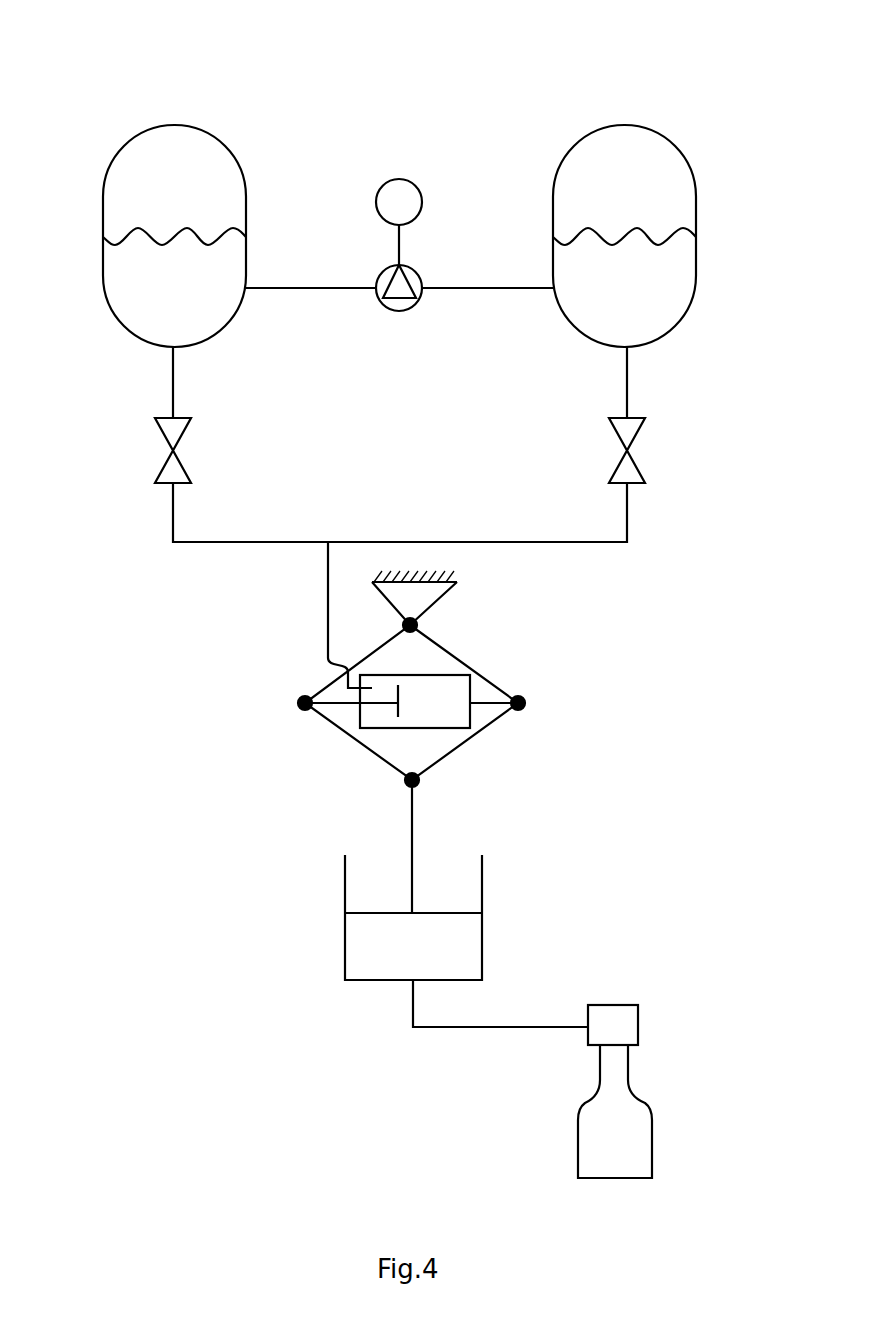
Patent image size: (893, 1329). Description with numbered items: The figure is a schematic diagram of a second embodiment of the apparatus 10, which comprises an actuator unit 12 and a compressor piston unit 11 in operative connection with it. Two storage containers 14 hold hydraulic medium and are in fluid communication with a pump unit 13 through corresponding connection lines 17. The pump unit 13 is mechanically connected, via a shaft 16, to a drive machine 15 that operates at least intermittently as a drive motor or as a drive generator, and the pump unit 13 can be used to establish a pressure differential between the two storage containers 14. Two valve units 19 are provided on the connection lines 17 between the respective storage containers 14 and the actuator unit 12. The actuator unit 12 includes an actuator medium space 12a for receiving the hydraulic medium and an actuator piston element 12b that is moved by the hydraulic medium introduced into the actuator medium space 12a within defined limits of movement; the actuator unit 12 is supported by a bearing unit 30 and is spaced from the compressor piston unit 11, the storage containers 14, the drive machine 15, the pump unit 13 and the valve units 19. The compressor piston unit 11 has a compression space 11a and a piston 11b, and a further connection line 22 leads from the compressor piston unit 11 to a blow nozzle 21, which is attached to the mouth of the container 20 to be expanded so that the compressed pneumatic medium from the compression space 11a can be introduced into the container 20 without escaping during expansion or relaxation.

The apparatus 10 is at (146, 80).
The compressor piston unit 11 is at (390, 885).
The compression space 11a is at (473, 939).
The piston 11b is at (372, 915).
The actuator unit 12 is at (442, 707).
The actuator medium space 12a is at (445, 683).
The actuator piston element 12b is at (378, 707).
The pump unit 13 is at (394, 312).
The storage container 14 is at (193, 165).
The drive machine 15 is at (412, 180).
The shaft 16 is at (401, 243).
The connection line 17 is at (300, 285).
The valve unit 19 is at (162, 433).
The container 20 is at (638, 1133).
The blow nozzle 21 is at (627, 1012).
The connection line 22 is at (527, 1022).
The bearing unit 30 is at (440, 595).